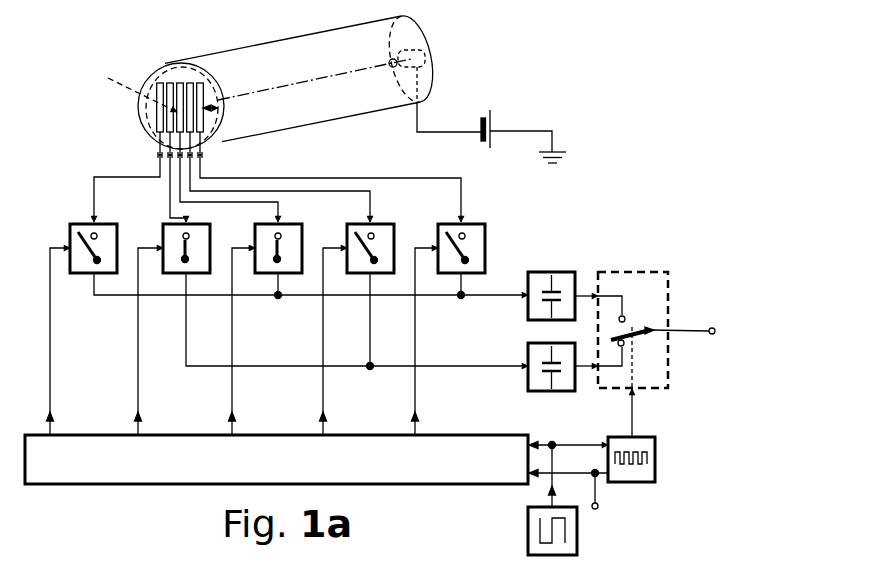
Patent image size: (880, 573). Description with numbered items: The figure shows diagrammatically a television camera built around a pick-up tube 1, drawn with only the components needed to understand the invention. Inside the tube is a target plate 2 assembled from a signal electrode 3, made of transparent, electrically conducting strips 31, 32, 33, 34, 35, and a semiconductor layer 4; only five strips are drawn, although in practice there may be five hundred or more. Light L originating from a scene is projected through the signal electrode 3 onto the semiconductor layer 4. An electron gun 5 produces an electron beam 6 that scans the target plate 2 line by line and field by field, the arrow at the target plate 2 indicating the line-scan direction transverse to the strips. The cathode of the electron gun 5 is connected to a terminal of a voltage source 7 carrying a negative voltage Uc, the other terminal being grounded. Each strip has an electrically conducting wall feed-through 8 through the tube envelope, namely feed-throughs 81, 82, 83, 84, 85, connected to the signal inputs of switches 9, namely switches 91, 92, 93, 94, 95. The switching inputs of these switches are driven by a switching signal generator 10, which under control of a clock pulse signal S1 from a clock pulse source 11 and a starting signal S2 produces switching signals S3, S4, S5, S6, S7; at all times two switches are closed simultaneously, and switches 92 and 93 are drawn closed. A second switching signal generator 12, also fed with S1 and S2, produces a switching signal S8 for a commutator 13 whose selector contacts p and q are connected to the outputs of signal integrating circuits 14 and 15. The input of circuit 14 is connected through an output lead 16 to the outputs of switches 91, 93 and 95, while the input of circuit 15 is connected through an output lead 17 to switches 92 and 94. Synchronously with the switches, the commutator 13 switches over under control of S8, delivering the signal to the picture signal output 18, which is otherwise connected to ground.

The pick-up tube 1 is at (304, 34).
The target plate 2 is at (169, 106).
The signal electrode 3 is at (100, 25).
The signal electrode strip 31 is at (160, 83).
The signal electrode strip 32 is at (170, 83).
The signal electrode strip 33 is at (180, 83).
The signal electrode strip 34 is at (190, 83).
The signal electrode strip 35 is at (200, 83).
The semiconductor layer 4 is at (225, 124).
The electron gun 5 is at (407, 59).
The electron beam 6 is at (313, 80).
The voltage source 7 is at (484, 117).
The wall feed-through 8 is at (277, 177).
The wall feed-through 81 is at (160, 152).
The wall feed-through 82 is at (160, 158).
The wall feed-through 83 is at (172, 160).
The wall feed-through 84 is at (198, 158).
The wall feed-through 85 is at (205, 149).
The switches 9 is at (252, 241).
The switch 91 is at (70, 222).
The switch 92 is at (163, 222).
The switch 93 is at (255, 222).
The switch 94 is at (347, 222).
The switch 95 is at (438, 222).
The switching signal generator 10 is at (27, 435).
The clock pulse source 11 is at (527, 526).
The second switching signal generator 12 is at (656, 459).
The commutator 13 is at (621, 310).
The signal integrating circuit 14 is at (527, 305).
The signal integrating circuit 15 is at (527, 379).
The output lead 16 is at (262, 297).
The output lead 17 is at (262, 365).
The picture signal output 18 is at (711, 327).
The light L is at (134, 85).
The negative voltage Uc is at (462, 119).
The selector contact p is at (619, 322).
The selector contact q is at (618, 346).
The clock pulse signal S1 is at (546, 490).
The starting signal S2 is at (599, 505).
The switching signal S3 is at (51, 413).
The switching signal S4 is at (139, 413).
The switching signal S5 is at (233, 413).
The switching signal S6 is at (324, 413).
The switching signal S7 is at (416, 413).
The switching signal S8 is at (628, 398).